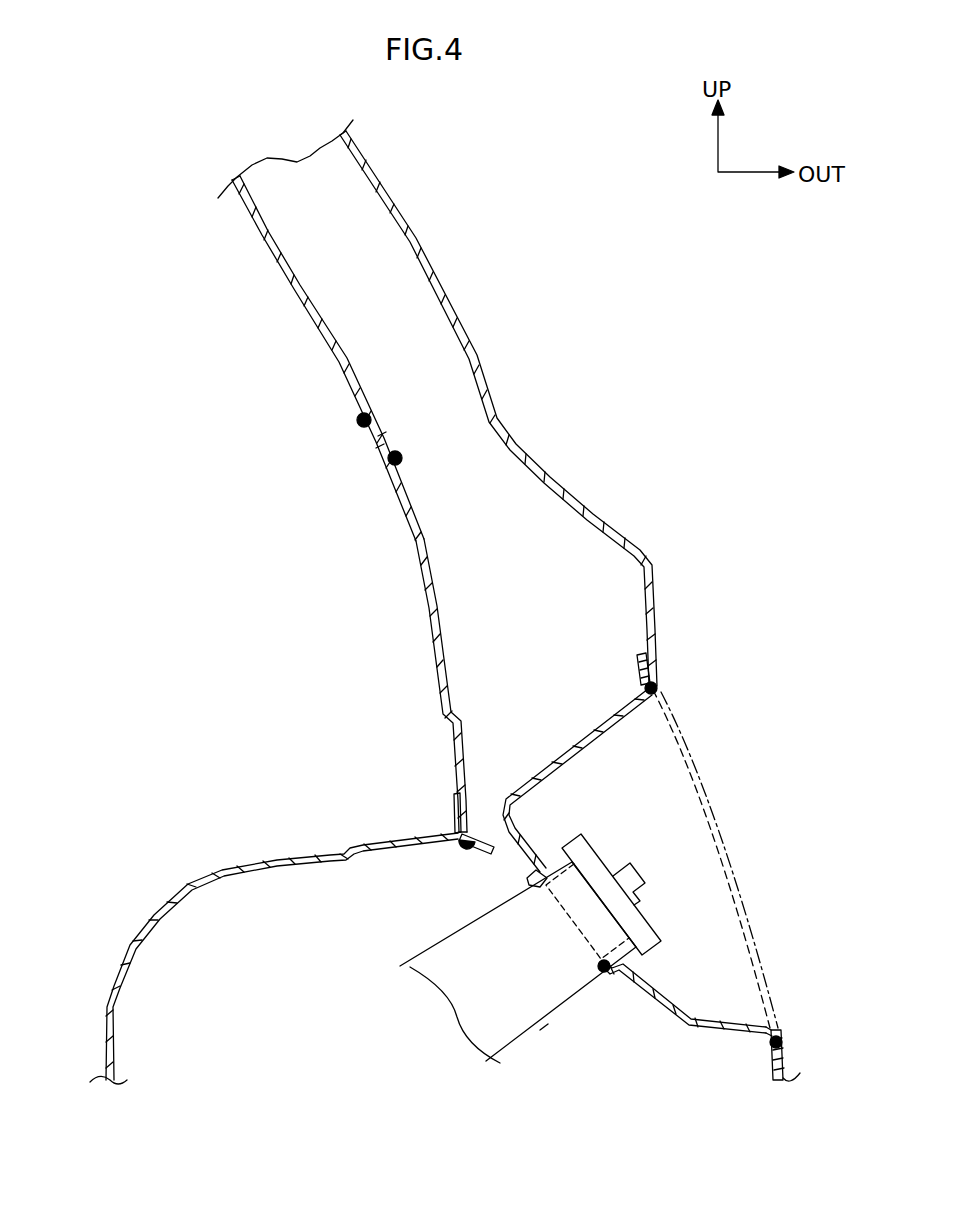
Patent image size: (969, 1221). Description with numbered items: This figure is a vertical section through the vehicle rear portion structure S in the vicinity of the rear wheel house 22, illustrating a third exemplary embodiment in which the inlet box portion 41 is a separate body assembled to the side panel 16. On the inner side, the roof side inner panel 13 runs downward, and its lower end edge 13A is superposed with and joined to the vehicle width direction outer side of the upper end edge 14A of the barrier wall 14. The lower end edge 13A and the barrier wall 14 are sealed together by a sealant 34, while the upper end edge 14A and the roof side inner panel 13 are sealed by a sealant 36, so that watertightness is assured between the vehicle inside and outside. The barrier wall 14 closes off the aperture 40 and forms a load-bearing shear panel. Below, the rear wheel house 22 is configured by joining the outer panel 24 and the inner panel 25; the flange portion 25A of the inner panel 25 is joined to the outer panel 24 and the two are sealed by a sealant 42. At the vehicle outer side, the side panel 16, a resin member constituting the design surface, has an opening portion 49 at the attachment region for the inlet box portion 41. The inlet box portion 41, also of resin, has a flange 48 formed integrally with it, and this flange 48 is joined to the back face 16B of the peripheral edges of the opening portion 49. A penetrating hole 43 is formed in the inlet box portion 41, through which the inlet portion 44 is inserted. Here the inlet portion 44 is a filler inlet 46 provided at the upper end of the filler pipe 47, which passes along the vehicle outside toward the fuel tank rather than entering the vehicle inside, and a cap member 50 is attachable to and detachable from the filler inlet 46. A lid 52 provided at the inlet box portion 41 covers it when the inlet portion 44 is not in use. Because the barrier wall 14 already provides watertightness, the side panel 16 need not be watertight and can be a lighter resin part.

The roof side inner panel 13 is at (296, 290).
The lower end edge 13A is at (383, 447).
The barrier wall 14 is at (446, 612).
The upper end edge 14A is at (378, 452).
The side panel 16 is at (592, 497).
The back face 16B is at (637, 663).
The rear wheel house 22 is at (399, 887).
The outer panel 24 is at (487, 838).
The inner panel 25 is at (272, 862).
The flange portion 25A is at (455, 808).
The sealant 34 is at (402, 462).
The sealant 36 is at (357, 418).
The aperture 40 is at (422, 627).
The inlet box portion 41 is at (655, 1010).
The sealant 42 is at (466, 850).
The penetrating hole 43 is at (603, 975).
The inlet portion 44 is at (616, 863).
The filler inlet 46 is at (583, 865).
The filler pipe 47 is at (540, 1030).
The flange 48 is at (645, 686).
The opening portion 49 is at (680, 813).
The cap member 50 is at (660, 938).
The lid 52 is at (733, 845).
The vehicle rear portion structure S is at (557, 200).